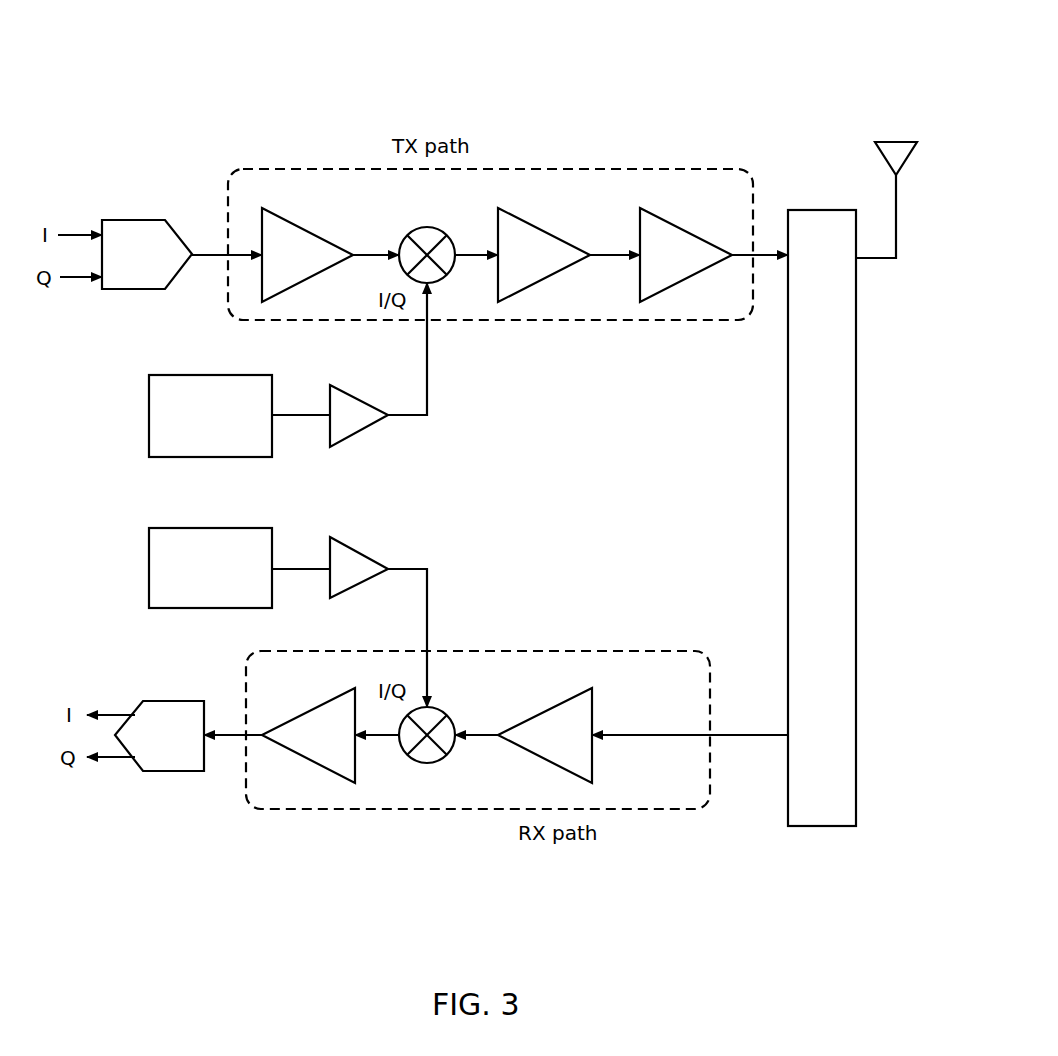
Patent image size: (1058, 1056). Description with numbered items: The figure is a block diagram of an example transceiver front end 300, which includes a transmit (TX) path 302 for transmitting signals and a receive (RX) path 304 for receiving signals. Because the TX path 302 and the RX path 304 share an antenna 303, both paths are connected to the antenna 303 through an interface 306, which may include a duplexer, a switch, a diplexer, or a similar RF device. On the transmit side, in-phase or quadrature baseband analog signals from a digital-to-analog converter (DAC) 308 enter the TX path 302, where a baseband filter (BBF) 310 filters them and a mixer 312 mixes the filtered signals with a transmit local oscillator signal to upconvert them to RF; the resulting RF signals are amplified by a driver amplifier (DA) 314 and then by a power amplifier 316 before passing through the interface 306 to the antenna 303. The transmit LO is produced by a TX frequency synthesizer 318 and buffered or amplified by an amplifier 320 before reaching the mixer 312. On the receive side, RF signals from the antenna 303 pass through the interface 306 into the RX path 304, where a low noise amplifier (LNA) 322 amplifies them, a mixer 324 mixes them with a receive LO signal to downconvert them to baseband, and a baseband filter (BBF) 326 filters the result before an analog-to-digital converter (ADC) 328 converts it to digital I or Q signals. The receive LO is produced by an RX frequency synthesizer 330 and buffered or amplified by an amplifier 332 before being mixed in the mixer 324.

The transceiver front end 300 is at (834, 33).
The transmit (TX) path 302 is at (672, 169).
The antenna 303 is at (893, 140).
The receive (RX) path 304 is at (640, 651).
The interface 306 is at (813, 210).
The digital-to-analog converter (DAC) 308 is at (128, 220).
The baseband filter (BBF) 310 is at (316, 235).
The mixer 312 is at (427, 227).
The driver amplifier (DA) 314 is at (551, 235).
The power amplifier 316 is at (676, 226).
The TX frequency synthesizer 318 is at (236, 375).
The amplifier 320 is at (348, 394).
The low noise amplifier (LNA) 322 is at (594, 714).
The mixer 324 is at (447, 713).
The baseband filter (BBF) 326 is at (323, 704).
The analog-to-digital converter (ADC) 328 is at (171, 701).
The RX frequency synthesizer 330 is at (236, 528).
The amplifier 332 is at (348, 547).